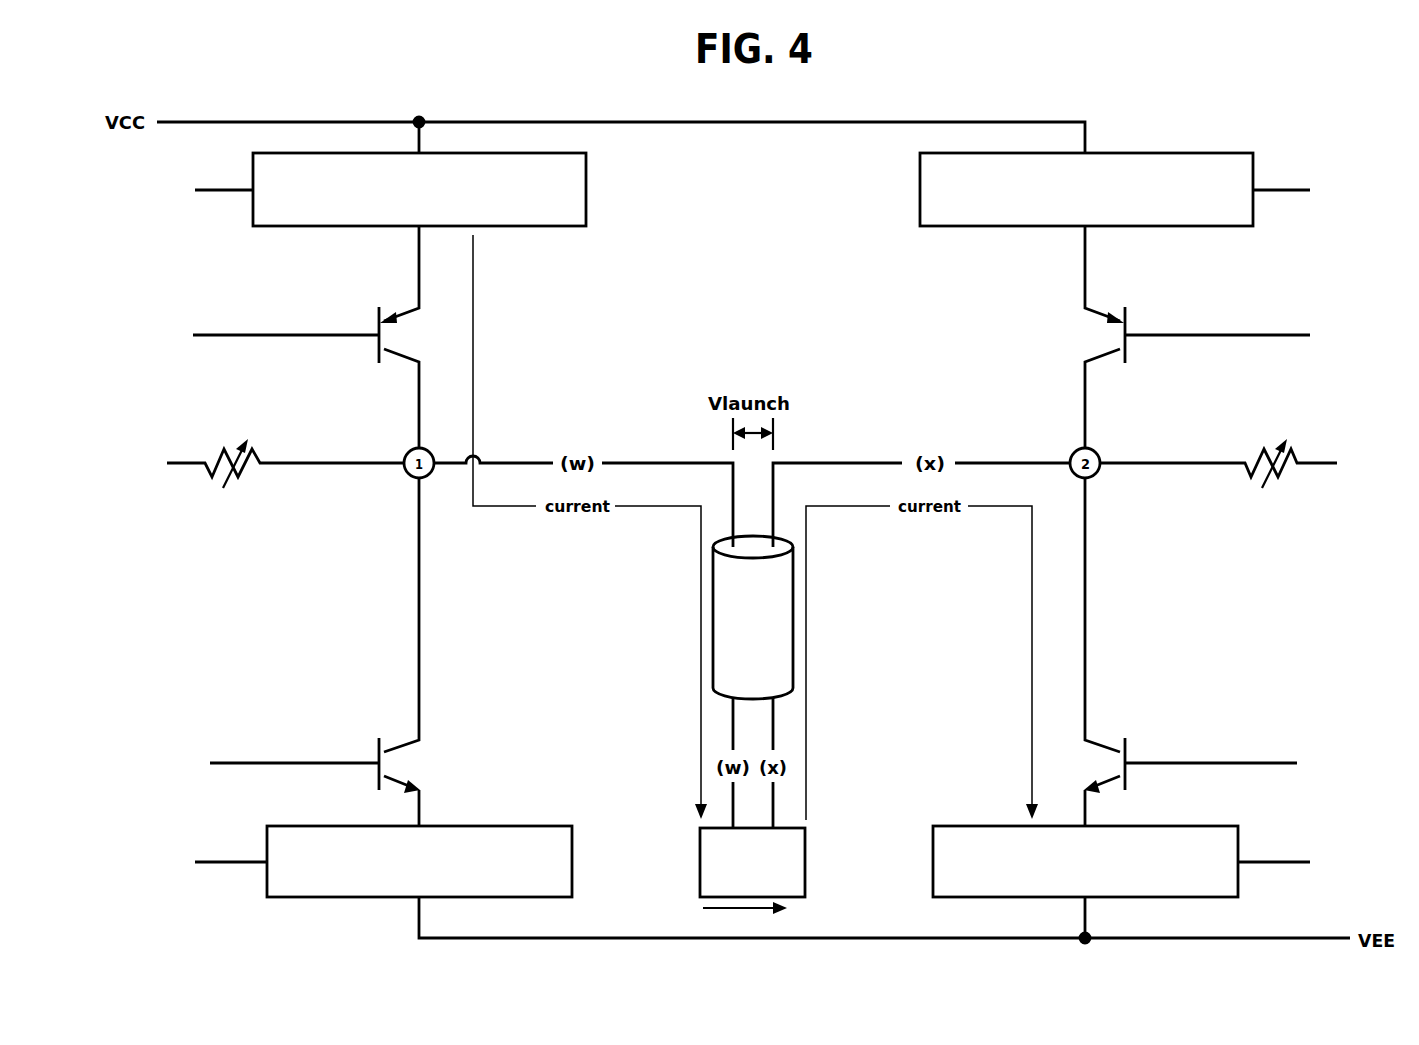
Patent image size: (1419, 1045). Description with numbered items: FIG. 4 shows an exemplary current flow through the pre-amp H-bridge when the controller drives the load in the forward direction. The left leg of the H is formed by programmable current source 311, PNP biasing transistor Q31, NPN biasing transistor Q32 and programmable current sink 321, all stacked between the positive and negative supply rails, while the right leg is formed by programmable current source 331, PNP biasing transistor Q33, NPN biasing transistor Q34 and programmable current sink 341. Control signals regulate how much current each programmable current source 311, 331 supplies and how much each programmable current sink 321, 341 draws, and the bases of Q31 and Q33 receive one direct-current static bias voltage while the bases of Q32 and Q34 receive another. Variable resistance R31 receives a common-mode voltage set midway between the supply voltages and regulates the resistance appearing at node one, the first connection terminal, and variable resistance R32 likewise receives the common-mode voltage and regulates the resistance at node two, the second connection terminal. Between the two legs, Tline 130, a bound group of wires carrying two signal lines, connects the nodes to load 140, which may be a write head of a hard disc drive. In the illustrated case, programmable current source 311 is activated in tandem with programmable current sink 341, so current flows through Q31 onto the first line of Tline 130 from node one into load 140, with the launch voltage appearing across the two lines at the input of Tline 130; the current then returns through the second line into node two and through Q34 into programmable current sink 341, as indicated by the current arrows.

The programmable current source 311 is at (344, 189).
The programmable current source 331 is at (1155, 189).
The programmable current sink 321 is at (337, 861).
The programmable current sink 341 is at (1161, 861).
The Tline 130 is at (753, 617).
The load 140 is at (752, 871).
The biasing transistor Q31 is at (261, 337).
The biasing transistor Q32 is at (261, 652).
The biasing transistor Q33 is at (1245, 337).
The biasing transistor Q34 is at (1238, 652).
The variable resistance R31 is at (253, 448).
The variable resistance R32 is at (1247, 448).